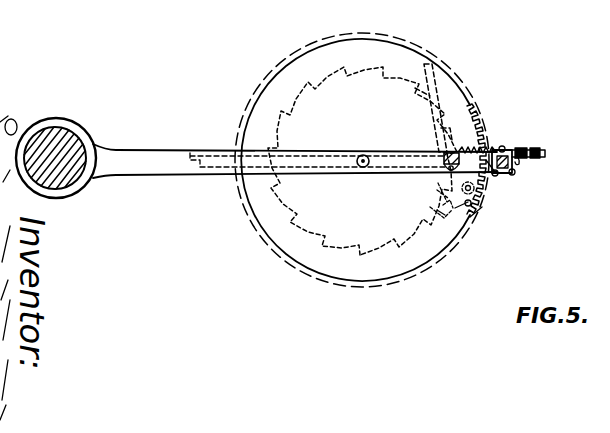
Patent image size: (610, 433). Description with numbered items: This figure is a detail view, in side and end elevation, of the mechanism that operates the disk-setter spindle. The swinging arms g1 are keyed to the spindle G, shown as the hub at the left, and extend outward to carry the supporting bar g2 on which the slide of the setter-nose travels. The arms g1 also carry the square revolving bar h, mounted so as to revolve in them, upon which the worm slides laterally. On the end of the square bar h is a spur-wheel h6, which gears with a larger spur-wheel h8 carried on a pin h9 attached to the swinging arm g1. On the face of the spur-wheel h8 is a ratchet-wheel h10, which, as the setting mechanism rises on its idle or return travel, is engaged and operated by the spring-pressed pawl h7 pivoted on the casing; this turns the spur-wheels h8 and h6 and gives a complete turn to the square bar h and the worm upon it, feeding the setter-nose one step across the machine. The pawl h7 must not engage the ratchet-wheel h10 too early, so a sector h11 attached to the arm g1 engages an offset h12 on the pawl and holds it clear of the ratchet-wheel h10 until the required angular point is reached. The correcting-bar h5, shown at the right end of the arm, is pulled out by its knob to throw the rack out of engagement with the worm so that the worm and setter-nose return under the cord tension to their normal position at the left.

The spindle G is at (50, 184).
The arms g1 is at (207, 168).
The bar g2 is at (446, 156).
The square revolving bar h is at (508, 171).
The correcting-bar h5 is at (545, 154).
The spur-wheel h6 is at (513, 152).
The pawl h7 is at (482, 219).
The spur-wheel h8 is at (487, 121).
The pin h9 is at (366, 152).
The ratchet-wheel h10 is at (362, 161).
The sector h11 is at (433, 85).
The offset h12 is at (436, 214).